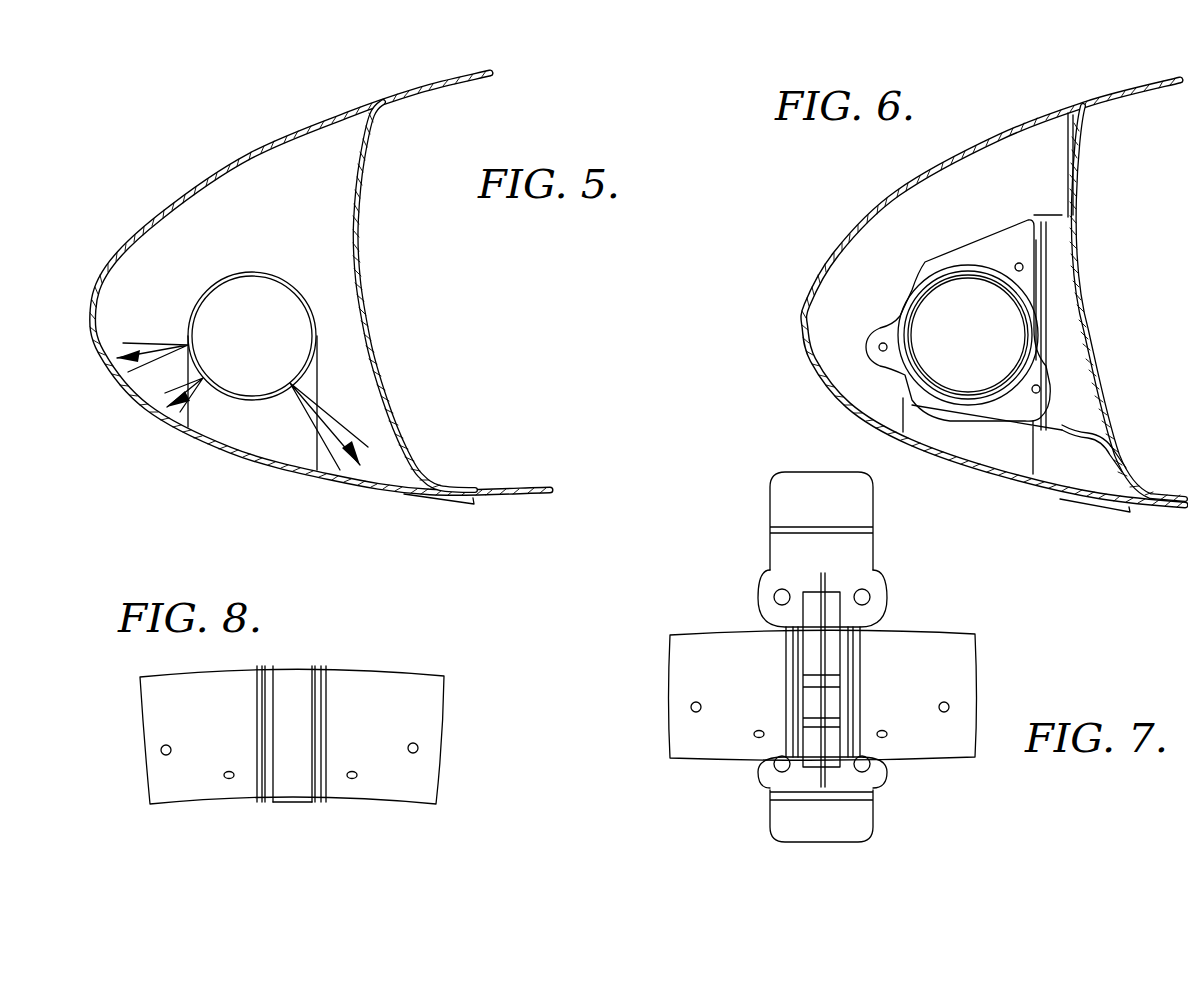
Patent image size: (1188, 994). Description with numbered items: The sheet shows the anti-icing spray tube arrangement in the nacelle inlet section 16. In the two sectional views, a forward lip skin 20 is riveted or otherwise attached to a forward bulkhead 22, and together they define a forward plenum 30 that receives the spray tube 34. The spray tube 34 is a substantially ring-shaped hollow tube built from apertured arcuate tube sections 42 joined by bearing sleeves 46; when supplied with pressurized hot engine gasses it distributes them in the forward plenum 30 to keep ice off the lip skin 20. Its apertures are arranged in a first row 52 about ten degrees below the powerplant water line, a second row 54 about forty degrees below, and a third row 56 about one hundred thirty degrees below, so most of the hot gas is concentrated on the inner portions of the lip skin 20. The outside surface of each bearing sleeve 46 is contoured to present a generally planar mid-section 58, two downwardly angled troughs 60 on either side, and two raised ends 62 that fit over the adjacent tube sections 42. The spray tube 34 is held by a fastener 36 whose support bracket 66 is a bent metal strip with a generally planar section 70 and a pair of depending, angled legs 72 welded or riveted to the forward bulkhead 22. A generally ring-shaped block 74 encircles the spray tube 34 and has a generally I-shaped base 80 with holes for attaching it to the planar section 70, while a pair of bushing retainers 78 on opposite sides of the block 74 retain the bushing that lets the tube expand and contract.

In FIG. 5, the inlet section 16 is at (372, 72).
In FIG. 6, the inlet section 16 is at (1100, 68).
In FIG. 5, the forward lip skin 20 is at (133, 240).
In FIG. 6, the forward lip skin 20 is at (835, 240).
In FIG. 5, the forward bulkhead 22 is at (365, 185).
In FIG. 6, the forward bulkhead 22 is at (1081, 197).
In FIG. 5, the forward plenum 30 is at (291, 201).
In FIG. 6, the forward plenum 30 is at (929, 203).
In FIG. 5, the spray tube 34 is at (252, 272).
In FIG. 6, the spray tube 34 is at (928, 288).
In FIG. 7, the spray tube 34 is at (698, 630).
In FIG. 8, the spray tube 34 is at (404, 674).
In FIG. 6, the fastener 36 is at (880, 288).
In FIG. 7, the fastener 36 is at (905, 585).
In FIG. 7, the arcuate tube section 42 is at (687, 673).
In FIG. 8, the arcuate tube section 42 is at (150, 705).
In FIG. 7, the bearing sleeve 46 is at (788, 678).
In FIG. 8, the bearing sleeve 46 is at (293, 673).
In FIG. 5, the first row of apertures 52 is at (191, 344).
In FIG. 7, the first row of apertures 52 is at (948, 705).
In FIG. 8, the first row of apertures 52 is at (416, 747).
In FIG. 5, the second row of apertures 54 is at (205, 376).
In FIG. 7, the second row of apertures 54 is at (885, 734).
In FIG. 8, the second row of apertures 54 is at (227, 773).
In FIG. 5, the third row of apertures 56 is at (291, 382).
In FIG. 8, the planar mid-section 58 is at (292, 803).
In FIG. 8, the downwardly angled trough 60 is at (265, 802).
In FIG. 8, the raised end 62 is at (260, 720).
In FIG. 6, the support bracket 66 is at (1042, 186).
In FIG. 7, the support bracket 66 is at (768, 465).
In FIG. 6, the planar section 70 is at (1050, 282).
In FIG. 7, the planar section 70 is at (762, 620).
In FIG. 6, the leg 72 is at (1071, 150).
In FIG. 7, the leg 72 is at (785, 505).
In FIG. 6, the block 74 is at (938, 262).
In FIG. 7, the block 74 is at (832, 655).
In FIG. 6, the bushing retainer 78 is at (1046, 363).
In FIG. 7, the bushing retainer 78 is at (840, 700).
In FIG. 6, the I-shaped base 80 is at (1050, 328).
In FIG. 7, the I-shaped base 80 is at (878, 594).